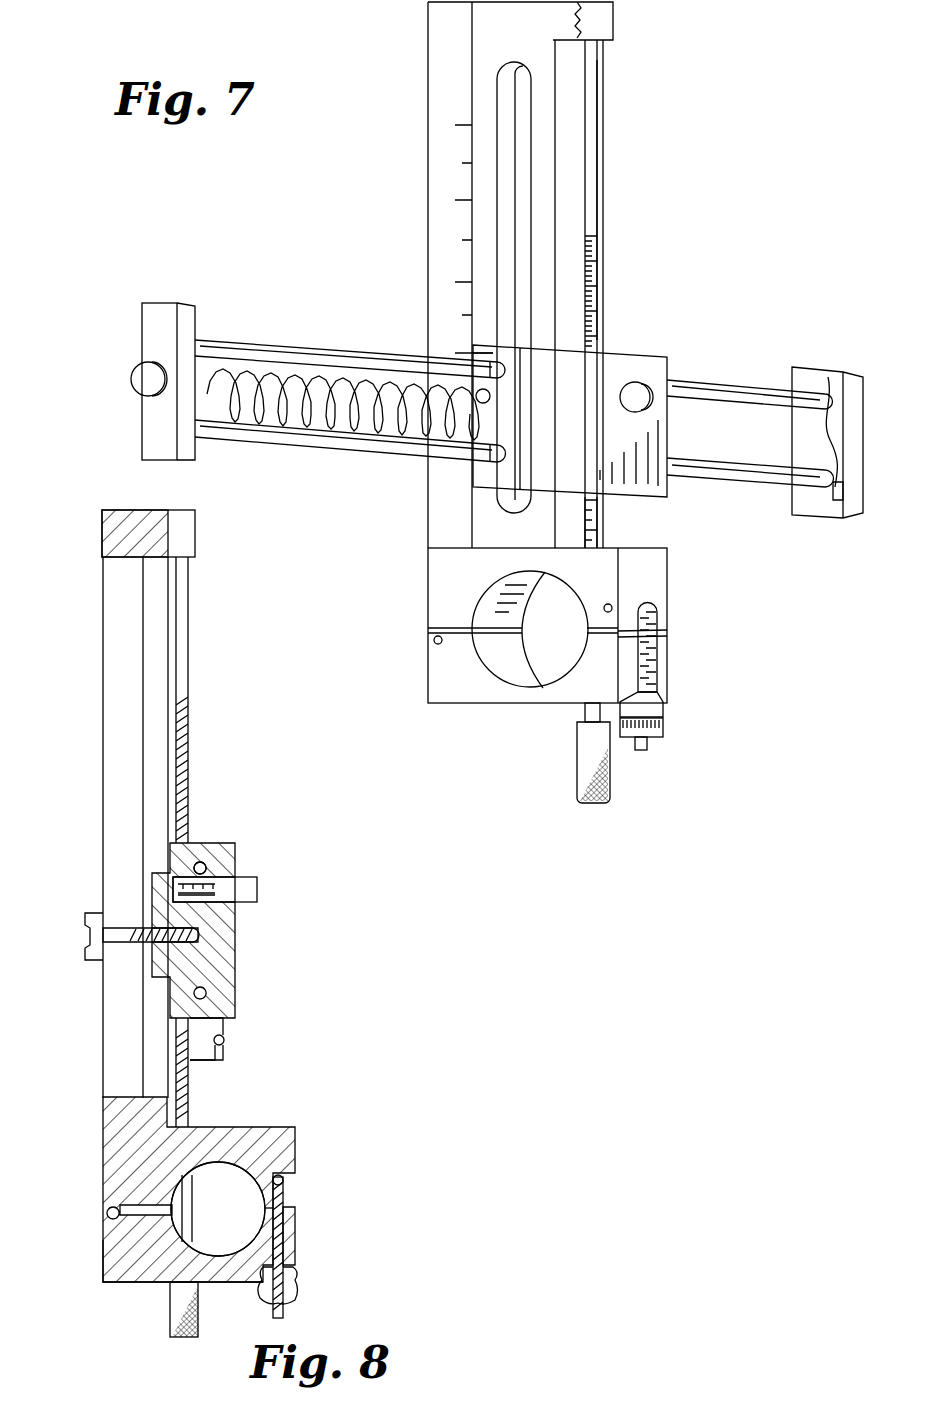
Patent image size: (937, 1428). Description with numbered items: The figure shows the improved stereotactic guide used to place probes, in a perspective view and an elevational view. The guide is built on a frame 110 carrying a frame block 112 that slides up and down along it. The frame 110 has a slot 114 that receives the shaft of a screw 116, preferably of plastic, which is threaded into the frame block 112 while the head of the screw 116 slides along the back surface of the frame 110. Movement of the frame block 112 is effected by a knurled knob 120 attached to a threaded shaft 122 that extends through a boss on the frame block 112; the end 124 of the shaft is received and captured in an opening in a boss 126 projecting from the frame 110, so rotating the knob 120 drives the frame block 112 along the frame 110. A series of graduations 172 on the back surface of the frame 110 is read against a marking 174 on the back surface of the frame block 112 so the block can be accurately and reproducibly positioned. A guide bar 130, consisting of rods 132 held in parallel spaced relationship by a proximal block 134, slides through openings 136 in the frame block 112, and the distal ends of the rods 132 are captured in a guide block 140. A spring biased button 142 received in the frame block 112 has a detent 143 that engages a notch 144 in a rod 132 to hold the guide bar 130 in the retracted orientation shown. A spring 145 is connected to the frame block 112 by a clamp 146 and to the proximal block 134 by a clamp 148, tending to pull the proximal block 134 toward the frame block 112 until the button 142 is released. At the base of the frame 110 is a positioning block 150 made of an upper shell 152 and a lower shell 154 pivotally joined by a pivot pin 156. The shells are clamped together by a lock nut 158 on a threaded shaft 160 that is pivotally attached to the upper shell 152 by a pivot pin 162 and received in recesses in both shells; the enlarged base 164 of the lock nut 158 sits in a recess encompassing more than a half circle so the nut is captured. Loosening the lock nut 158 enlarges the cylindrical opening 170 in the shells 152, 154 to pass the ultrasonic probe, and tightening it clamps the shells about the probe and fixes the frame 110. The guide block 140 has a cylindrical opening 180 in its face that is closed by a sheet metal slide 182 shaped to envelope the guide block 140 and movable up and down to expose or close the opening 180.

In FIG. 7, the frame 110 is at (420, 62).
In FIG. 8, the frame 110 is at (95, 690).
In FIG. 7, the frame block 112 is at (667, 488).
In FIG. 8, the frame block 112 is at (222, 957).
In FIG. 7, the slot 114 is at (523, 128).
In FIG. 8, the screw 116 is at (88, 918).
In FIG. 7, the knurled knob 120 is at (613, 782).
In FIG. 8, the knurled knob 120 is at (170, 1310).
In FIG. 7, the threaded shaft 122 is at (597, 272).
In FIG. 8, the threaded shaft 122 is at (190, 625).
In FIG. 7, the end of the shaft 124 is at (597, 98).
In FIG. 7, the boss 126 is at (613, 20).
In FIG. 7, the guide bar 130 is at (245, 330).
In FIG. 7, the rods 132 is at (316, 352).
In FIG. 7, the proximal block 134 is at (163, 302).
In FIG. 7, the openings 136 is at (500, 372).
In FIG. 7, the guide block 140 is at (826, 372).
In FIG. 8, the guide block 140 is at (210, 1058).
In FIG. 7, the spring biased button 142 is at (645, 385).
In FIG. 8, the spring biased button 142 is at (250, 890).
In FIG. 8, the detent 143 is at (207, 865).
In FIG. 8, the notch 144 is at (207, 898).
In FIG. 7, the spring 145 is at (298, 428).
In FIG. 7, the clamp 146 is at (492, 400).
In FIG. 7, the clamp 148 is at (132, 382).
In FIG. 7, the positioning block 150 is at (420, 548).
In FIG. 7, the upper shell 152 is at (440, 578).
In FIG. 8, the upper shell 152 is at (115, 1157).
In FIG. 7, the lower shell 154 is at (438, 678).
In FIG. 8, the lower shell 154 is at (112, 1255).
In FIG. 7, the pivot pin 156 is at (434, 641).
In FIG. 7, the lock nut 158 is at (680, 722).
In FIG. 8, the lock nut 158 is at (292, 1293).
In FIG. 7, the threaded shaft 160 is at (658, 650).
In FIG. 8, the threaded shaft 160 is at (282, 1245).
In FIG. 7, the pivot pin 162 is at (612, 607).
In FIG. 8, the pivot pin 162 is at (285, 1182).
In FIG. 7, the enlarged base 164 is at (662, 691).
In FIG. 7, the cylindrical opening 170 is at (548, 650).
In FIG. 8, the cylindrical opening 170 is at (225, 1168).
In FIG. 7, the graduations 172 is at (433, 262).
In FIG. 7, the marking 174 is at (478, 355).
In FIG. 7, the cylindrical opening 180 is at (832, 500).
In FIG. 8, the cylindrical opening 180 is at (225, 1035).
In FIG. 7, the sheet metal slide 182 is at (860, 412).